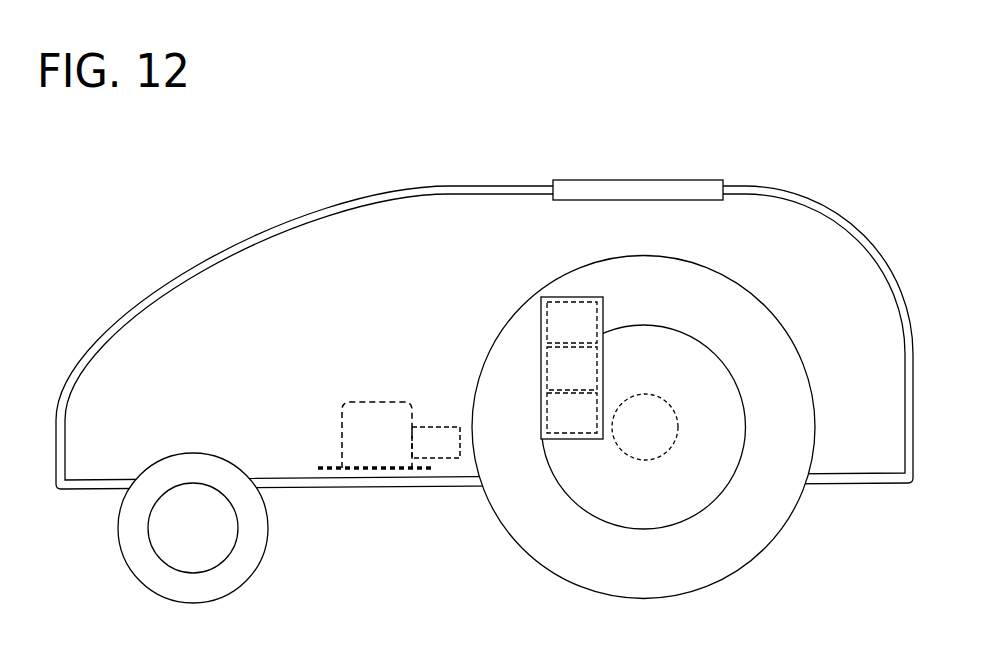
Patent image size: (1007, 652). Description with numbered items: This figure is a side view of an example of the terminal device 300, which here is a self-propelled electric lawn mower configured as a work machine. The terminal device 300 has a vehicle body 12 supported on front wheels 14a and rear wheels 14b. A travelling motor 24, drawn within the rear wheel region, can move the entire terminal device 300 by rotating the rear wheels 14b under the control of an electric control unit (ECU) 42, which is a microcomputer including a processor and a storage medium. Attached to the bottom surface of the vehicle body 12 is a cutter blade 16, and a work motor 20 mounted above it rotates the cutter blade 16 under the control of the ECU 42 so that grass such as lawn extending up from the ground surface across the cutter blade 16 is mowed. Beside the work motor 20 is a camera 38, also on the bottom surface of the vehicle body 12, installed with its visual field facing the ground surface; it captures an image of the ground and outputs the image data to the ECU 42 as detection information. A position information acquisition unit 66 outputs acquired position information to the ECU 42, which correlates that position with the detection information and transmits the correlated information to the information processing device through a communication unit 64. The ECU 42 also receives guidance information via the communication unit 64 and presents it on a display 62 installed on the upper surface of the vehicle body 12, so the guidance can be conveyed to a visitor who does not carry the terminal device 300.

The terminal device 300 is at (112, 198).
The vehicle body 12 is at (774, 185).
The front wheels 14a is at (118, 529).
The rear wheels 14b is at (523, 553).
The cutter blade 16 is at (322, 466).
The work motor 20 is at (380, 402).
The camera 38 is at (436, 442).
The display 62 is at (637, 180).
The position information acquisition unit 66 is at (572, 322).
The communication unit 64 is at (572, 368).
The electric control unit (ECU) 42 is at (572, 413).
The travelling motor 24 is at (645, 393).